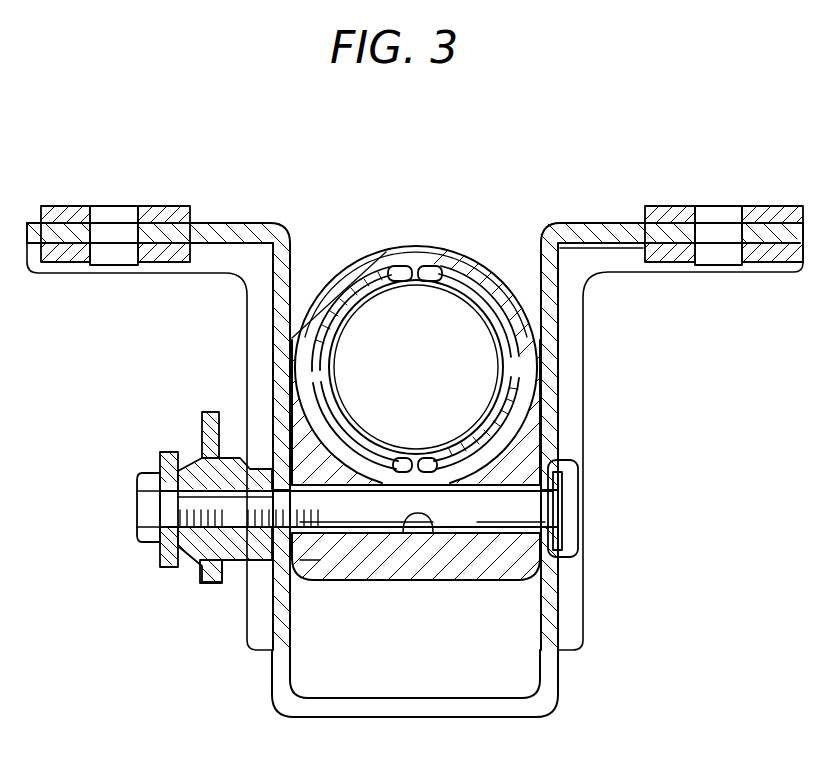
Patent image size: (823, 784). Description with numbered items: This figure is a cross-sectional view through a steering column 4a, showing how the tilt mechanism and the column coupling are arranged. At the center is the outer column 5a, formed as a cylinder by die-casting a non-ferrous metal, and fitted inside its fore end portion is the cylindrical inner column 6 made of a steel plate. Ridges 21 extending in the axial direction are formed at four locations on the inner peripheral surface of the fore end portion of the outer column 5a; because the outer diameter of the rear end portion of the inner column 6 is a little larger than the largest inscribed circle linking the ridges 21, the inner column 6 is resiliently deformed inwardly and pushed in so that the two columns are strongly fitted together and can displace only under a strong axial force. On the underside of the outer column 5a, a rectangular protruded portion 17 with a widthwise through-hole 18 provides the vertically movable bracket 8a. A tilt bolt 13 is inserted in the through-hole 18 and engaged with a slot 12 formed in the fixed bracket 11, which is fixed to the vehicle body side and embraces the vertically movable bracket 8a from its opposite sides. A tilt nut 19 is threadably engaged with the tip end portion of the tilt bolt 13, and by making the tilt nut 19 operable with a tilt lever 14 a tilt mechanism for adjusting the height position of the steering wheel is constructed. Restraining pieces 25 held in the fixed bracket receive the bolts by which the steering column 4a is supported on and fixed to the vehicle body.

The steering column 4a is at (368, 239).
The outer column 5a is at (482, 272).
The inner column 6 is at (343, 285).
The vertically movable bracket 8a is at (493, 560).
The fixed bracket 11 is at (550, 678).
The slot 12 is at (262, 462).
The tilt bolt 13 is at (365, 518).
The tilt lever 14 is at (200, 420).
The protruded portion 17 is at (330, 560).
The through-hole 18 is at (433, 533).
The tilt nut 19 is at (230, 548).
The ridges 21 is at (415, 460).
The restraining pieces 25 is at (60, 212).